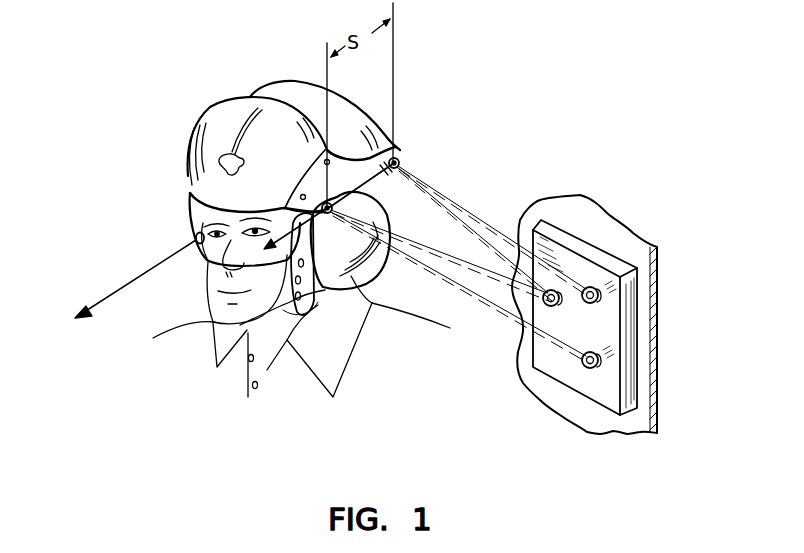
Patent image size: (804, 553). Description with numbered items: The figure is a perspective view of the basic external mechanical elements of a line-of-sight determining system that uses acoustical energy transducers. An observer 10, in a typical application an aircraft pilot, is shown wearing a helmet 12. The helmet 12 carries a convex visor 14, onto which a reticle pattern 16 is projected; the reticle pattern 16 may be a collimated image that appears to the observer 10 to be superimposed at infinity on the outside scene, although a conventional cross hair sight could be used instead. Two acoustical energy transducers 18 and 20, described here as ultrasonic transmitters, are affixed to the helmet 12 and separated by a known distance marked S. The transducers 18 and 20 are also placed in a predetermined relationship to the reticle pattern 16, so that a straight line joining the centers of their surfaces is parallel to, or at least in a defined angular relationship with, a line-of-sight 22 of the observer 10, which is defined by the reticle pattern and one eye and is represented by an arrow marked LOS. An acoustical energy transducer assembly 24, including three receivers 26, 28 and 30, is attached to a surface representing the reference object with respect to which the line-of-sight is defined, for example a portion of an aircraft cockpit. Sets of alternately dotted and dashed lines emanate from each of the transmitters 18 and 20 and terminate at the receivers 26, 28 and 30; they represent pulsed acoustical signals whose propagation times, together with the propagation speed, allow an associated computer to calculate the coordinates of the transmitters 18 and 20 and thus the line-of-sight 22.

The observer 10 is at (208, 390).
The helmet 12 is at (272, 83).
The convex visor 14 is at (188, 203).
The reticle pattern 16 is at (195, 238).
The acoustical energy transducer 18 is at (322, 204).
The acoustical energy transducer 20 is at (397, 157).
The line-of-sight 22 is at (122, 291).
The acoustical energy transducer assembly 24 is at (562, 368).
The receiver 26 is at (553, 293).
The receiver 28 is at (592, 369).
The receiver 30 is at (592, 304).